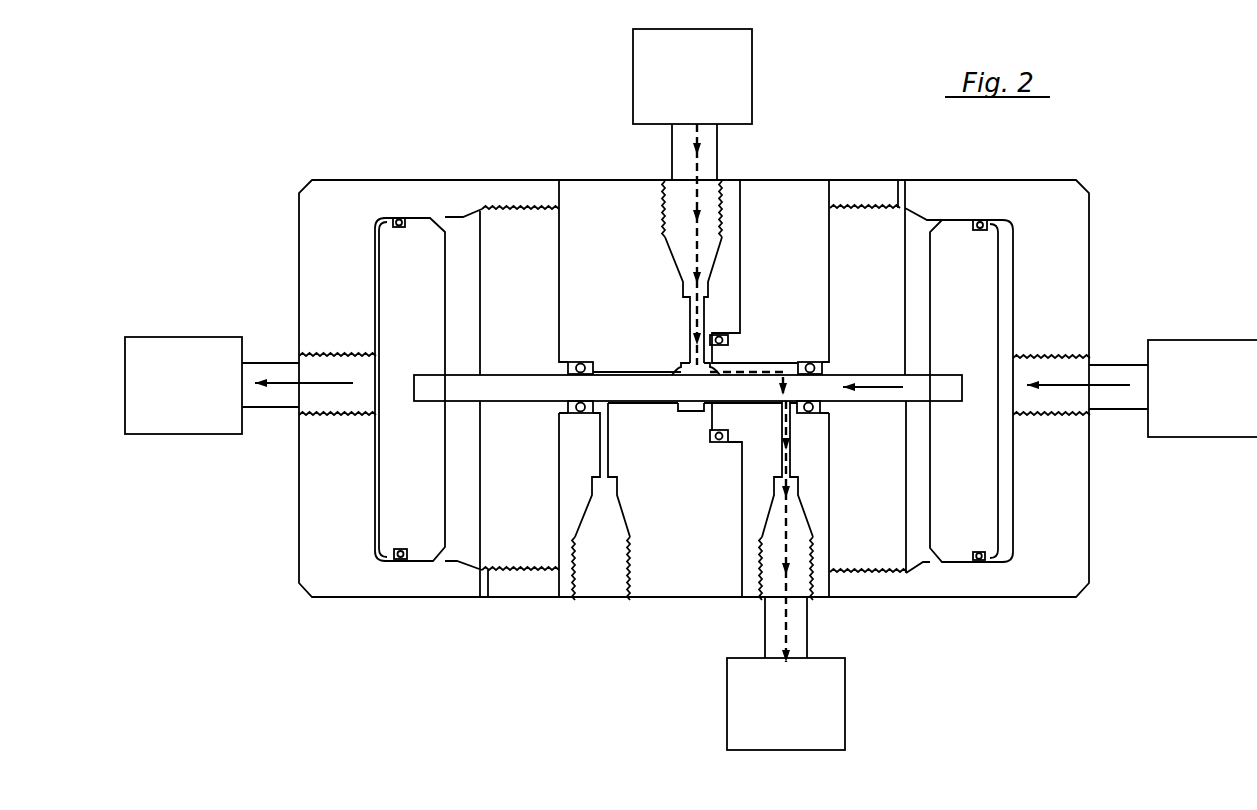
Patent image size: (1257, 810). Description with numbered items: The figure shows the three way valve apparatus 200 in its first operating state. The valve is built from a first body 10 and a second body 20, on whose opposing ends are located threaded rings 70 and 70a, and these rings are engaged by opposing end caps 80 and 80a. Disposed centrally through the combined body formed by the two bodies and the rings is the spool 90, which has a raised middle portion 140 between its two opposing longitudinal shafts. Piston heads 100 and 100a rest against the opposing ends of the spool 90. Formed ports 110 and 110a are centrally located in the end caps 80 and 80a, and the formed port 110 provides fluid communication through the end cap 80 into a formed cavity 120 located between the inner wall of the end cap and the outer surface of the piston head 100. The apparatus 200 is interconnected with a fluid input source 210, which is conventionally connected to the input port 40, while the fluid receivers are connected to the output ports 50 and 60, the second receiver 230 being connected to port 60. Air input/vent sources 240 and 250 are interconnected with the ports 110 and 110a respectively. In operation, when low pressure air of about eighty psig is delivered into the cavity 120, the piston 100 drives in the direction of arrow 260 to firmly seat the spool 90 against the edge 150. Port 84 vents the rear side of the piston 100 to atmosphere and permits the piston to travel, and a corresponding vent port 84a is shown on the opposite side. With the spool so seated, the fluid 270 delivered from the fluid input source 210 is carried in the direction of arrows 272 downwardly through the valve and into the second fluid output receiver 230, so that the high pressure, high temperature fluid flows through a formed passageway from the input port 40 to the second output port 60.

The first body 10 is at (625, 269).
The second body 20 is at (796, 269).
The port 40 is at (682, 232).
The port 50 is at (610, 540).
The port 60 is at (798, 523).
The threaded ring 70 is at (850, 269).
The threaded ring 70a is at (503, 269).
The end cap 80 is at (1062, 269).
The end cap 80a is at (362, 269).
The port 84 is at (903, 181).
The port 84a is at (485, 597).
The spool 90 is at (833, 380).
The piston head 100 is at (982, 269).
The piston head 100a is at (445, 269).
The formed port 110 is at (1057, 372).
The formed port 110a is at (358, 395).
The formed cavity 120 is at (1005, 327).
The raised middle portion 140 is at (698, 393).
The edge 150 is at (677, 366).
The apparatus 200 is at (677, 605).
The fluid input source 210 is at (743, 78).
The fluid output source 230 is at (828, 707).
The air input/vent source 240 is at (1182, 340).
The air input/vent source 250 is at (160, 337).
The arrow 260 is at (872, 392).
The fluid 270 is at (700, 150).
The arrows 272 is at (752, 365).